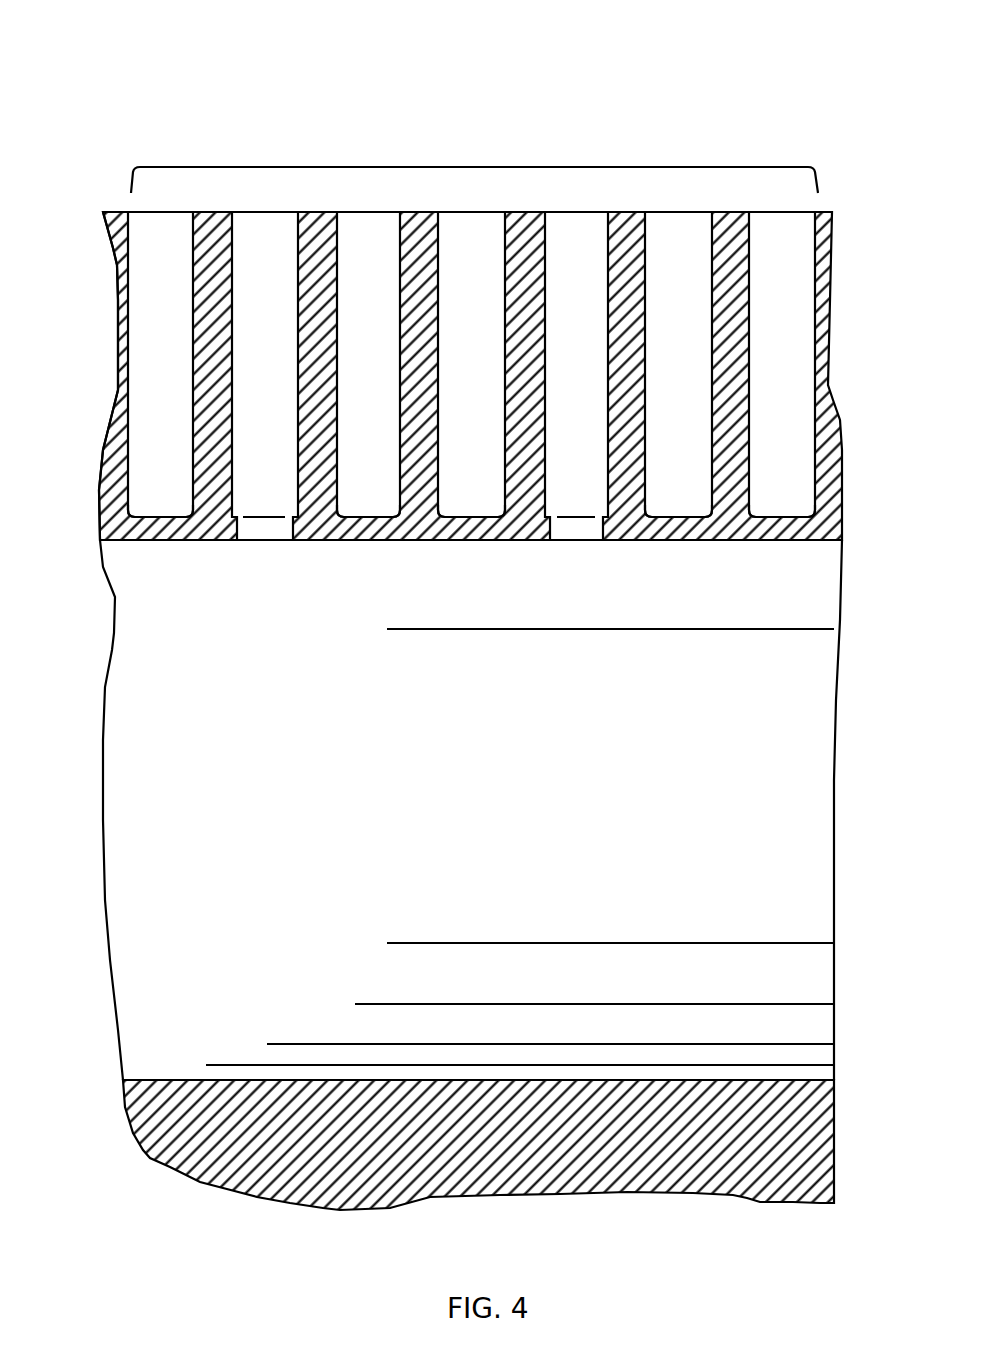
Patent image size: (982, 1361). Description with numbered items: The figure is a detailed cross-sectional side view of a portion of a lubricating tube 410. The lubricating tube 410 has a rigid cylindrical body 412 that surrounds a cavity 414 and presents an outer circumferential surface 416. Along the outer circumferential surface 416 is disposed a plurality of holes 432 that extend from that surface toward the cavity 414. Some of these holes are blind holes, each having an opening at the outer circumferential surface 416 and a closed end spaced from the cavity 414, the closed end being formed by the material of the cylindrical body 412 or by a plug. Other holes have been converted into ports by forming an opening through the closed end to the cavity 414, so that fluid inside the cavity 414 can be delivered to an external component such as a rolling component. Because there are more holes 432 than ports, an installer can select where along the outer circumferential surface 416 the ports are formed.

The lubricating tube 410 is at (124, 79).
The rigid cylindrical body 412 is at (830, 133).
The cavity 414 is at (493, 803).
The outer circumferential surface 416 is at (120, 212).
The holes 432 is at (474, 167).